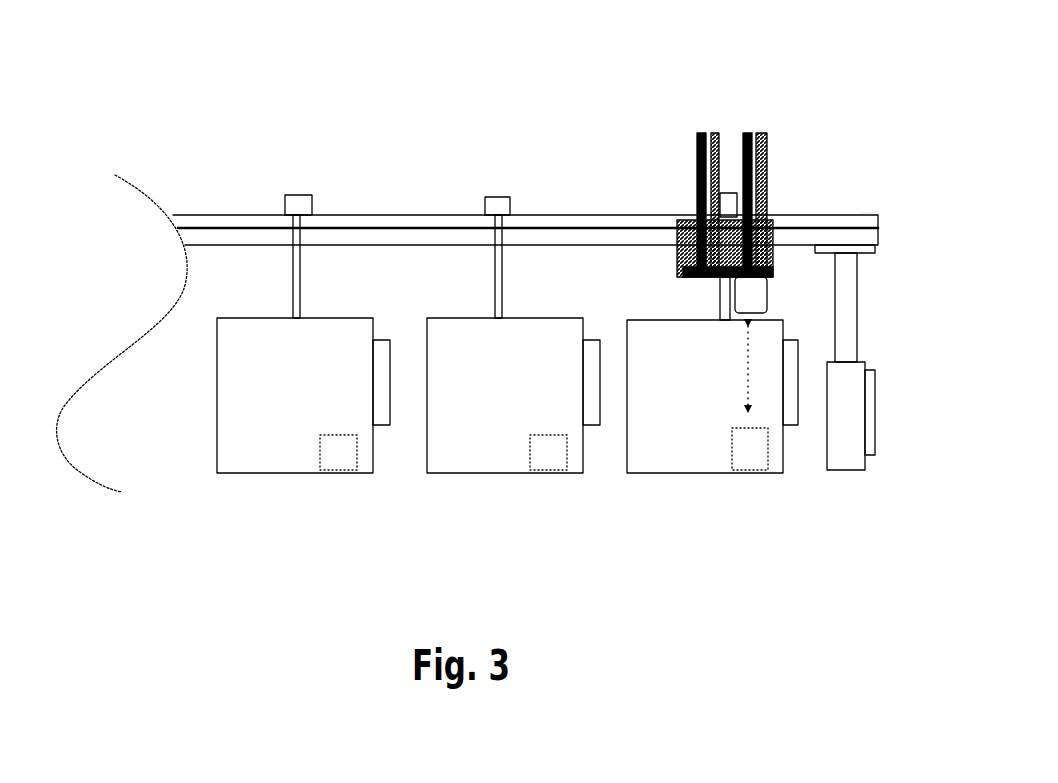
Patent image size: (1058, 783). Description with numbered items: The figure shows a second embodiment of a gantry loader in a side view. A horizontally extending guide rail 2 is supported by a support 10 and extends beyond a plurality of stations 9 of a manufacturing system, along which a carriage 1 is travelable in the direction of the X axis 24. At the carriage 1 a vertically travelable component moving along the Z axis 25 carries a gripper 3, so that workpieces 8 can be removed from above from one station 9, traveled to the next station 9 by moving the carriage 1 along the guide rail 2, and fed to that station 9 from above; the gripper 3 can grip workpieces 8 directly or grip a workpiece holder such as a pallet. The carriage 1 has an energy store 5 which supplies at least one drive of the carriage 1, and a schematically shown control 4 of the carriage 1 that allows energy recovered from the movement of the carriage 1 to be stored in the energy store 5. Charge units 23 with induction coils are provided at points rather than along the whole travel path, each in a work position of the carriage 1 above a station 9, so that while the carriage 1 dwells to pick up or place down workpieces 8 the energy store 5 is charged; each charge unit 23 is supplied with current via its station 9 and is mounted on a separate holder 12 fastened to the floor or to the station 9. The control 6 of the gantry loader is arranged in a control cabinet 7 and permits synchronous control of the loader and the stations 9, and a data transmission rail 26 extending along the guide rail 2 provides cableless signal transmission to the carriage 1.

The carriage 1 is at (160, 98).
The guide rail 2 is at (618, 215).
The gripper 3 is at (770, 288).
The control of the carriage 4 is at (768, 195).
The energy store 5 is at (723, 193).
The control of the gantry loader 6 is at (867, 447).
The control cabinet 7 is at (848, 465).
The workpiece 8 is at (747, 463).
The station 9 is at (298, 465).
The support 10 is at (852, 278).
The holder 12 is at (497, 287).
The charge unit 23 is at (500, 198).
The X axis 24 is at (530, 203).
The Z axis 25 is at (670, 167).
The data transmission rail 26 is at (858, 212).